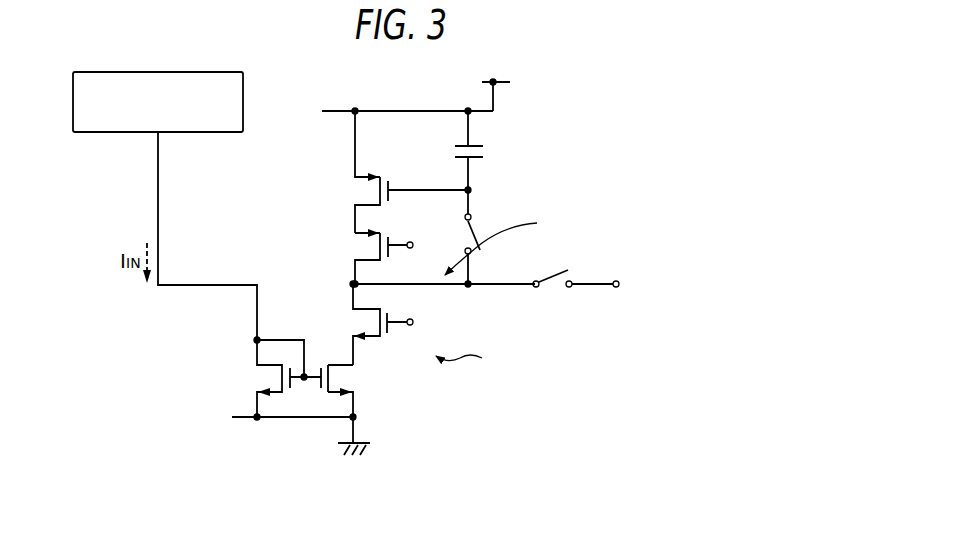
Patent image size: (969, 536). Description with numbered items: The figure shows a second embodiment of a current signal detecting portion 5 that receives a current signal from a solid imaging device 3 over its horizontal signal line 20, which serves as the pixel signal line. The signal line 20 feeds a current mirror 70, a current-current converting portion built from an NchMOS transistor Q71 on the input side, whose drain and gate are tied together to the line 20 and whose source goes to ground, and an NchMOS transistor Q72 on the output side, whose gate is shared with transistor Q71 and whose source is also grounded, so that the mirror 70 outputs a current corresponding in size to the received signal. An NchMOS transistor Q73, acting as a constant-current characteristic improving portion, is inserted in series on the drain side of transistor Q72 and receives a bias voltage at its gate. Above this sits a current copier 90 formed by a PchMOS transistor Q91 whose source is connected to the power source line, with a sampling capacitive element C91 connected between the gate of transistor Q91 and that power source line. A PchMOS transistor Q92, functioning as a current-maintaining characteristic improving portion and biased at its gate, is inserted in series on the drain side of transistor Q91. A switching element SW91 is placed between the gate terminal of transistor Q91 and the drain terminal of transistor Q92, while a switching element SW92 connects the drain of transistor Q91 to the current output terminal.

The solid imaging device 3 is at (73, 100).
The horizontal signal line 20 is at (157, 185).
The current signal detecting portion 5 is at (588, 123).
The current copier 90 is at (422, 132).
The current mirror 70 is at (306, 398).
The PchMOS transistor Q91 is at (361, 190).
The PchMOS transistor Q92 is at (361, 248).
The NchMOS transistor Q73 is at (360, 322).
The NchMOS transistor Q71 is at (262, 378).
The NchMOS transistor Q72 is at (355, 379).
The capacitive element C91 is at (486, 151).
The switching element SW91 is at (502, 216).
The switching element SW92 is at (552, 288).